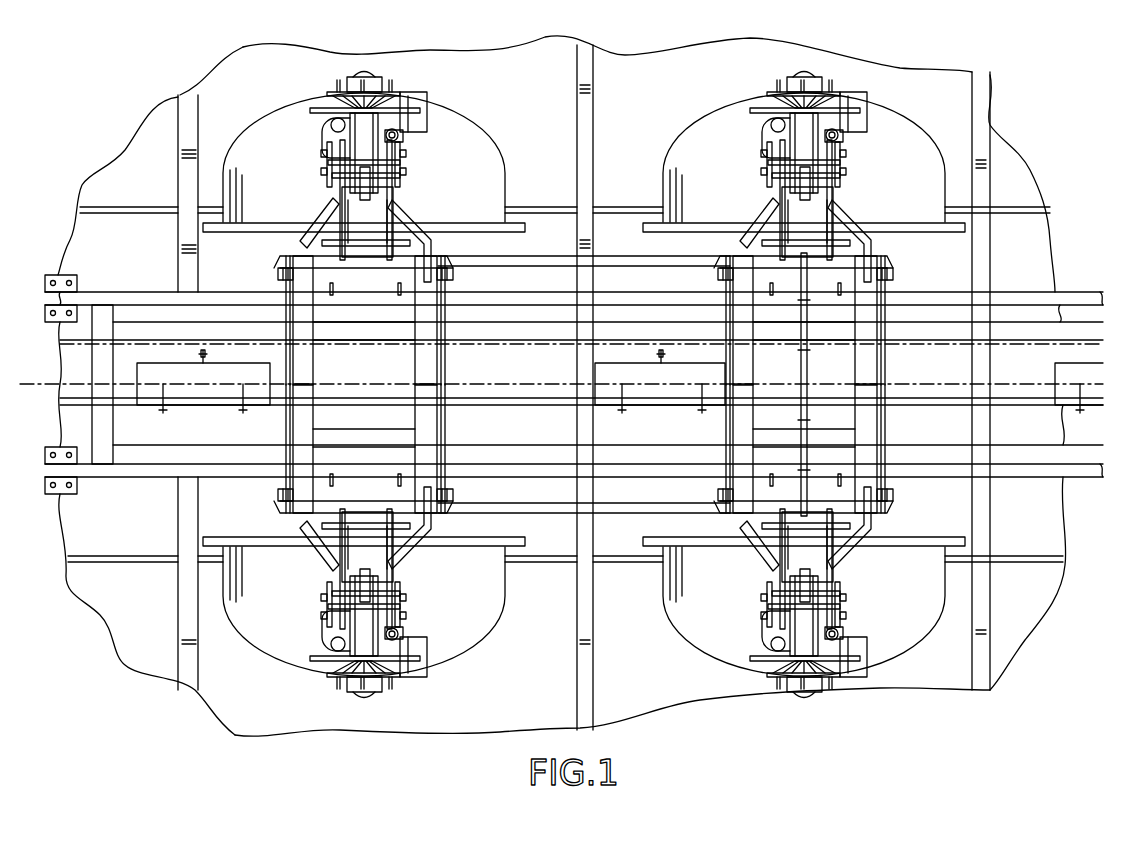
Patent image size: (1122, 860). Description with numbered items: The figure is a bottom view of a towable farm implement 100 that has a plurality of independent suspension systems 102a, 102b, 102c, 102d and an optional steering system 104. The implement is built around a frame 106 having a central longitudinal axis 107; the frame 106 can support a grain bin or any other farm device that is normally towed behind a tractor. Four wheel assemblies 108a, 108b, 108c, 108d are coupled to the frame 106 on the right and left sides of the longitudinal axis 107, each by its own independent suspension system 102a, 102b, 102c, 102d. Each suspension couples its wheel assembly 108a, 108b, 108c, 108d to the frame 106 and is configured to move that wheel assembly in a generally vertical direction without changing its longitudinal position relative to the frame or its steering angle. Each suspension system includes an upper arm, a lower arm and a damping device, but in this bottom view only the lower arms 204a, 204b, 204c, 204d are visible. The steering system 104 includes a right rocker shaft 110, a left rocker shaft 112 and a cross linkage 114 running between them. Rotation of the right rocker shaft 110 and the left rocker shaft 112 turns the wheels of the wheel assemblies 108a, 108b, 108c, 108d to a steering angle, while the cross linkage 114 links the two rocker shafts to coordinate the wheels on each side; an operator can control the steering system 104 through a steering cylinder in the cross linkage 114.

The towable farm implement 100 is at (151, 92).
The independent suspension system 102a is at (352, 210).
The independent suspension system 102b is at (790, 208).
The independent suspension system 102c is at (352, 563).
The independent suspension system 102d is at (790, 562).
The steering system 104 is at (824, 371).
The frame 106 is at (543, 278).
The central longitudinal axis 107 is at (455, 385).
The wheel assembly 108a is at (332, 103).
The wheel assembly 108b is at (772, 104).
The wheel assembly 108c is at (406, 655).
The wheel assembly 108d is at (848, 652).
The right rocker shaft 110 is at (606, 257).
The left rocker shaft 112 is at (555, 500).
The cross linkage 114 is at (780, 393).
The lower arm 204a is at (378, 212).
The lower arm 204b is at (818, 215).
The lower arm 204c is at (385, 553).
The lower arm 204d is at (822, 553).